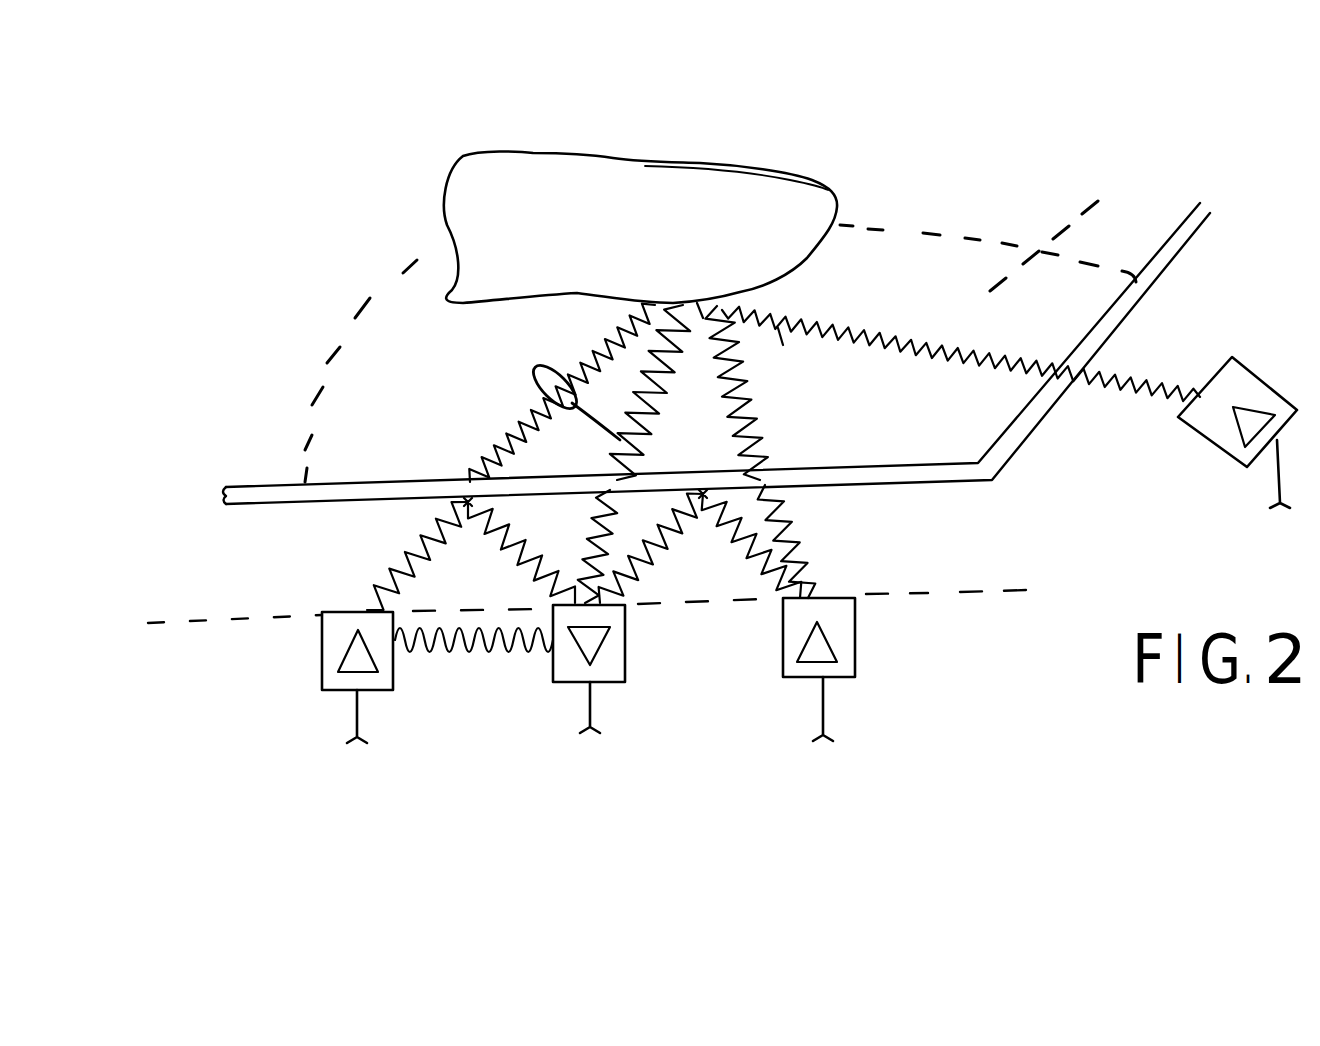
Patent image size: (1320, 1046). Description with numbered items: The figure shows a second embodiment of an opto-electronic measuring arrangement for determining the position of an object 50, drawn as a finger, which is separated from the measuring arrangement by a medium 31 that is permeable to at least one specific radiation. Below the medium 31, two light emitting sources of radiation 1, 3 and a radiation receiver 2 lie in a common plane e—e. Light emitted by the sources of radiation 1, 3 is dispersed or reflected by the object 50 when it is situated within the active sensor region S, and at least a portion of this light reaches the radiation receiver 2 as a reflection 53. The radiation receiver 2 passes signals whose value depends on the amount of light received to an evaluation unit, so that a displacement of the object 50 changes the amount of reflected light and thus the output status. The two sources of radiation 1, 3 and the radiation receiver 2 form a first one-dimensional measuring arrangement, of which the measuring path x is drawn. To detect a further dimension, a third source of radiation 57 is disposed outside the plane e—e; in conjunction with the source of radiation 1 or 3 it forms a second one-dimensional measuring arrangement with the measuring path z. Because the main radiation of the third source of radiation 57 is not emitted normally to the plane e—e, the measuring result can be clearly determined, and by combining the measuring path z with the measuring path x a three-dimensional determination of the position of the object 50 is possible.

The object 50 is at (477, 228).
The medium 31 is at (287, 487).
The reflection 53 is at (678, 434).
The third source of radiation 57 is at (1225, 378).
The source of radiation 3 is at (332, 620).
The radiation receiver 2 is at (618, 665).
The source of radiation 1 is at (843, 627).
The active sensor region S is at (1064, 230).
The plane e— e is at (591, 607).
The measuring path x is at (561, 389).
The measuring path z is at (767, 438).